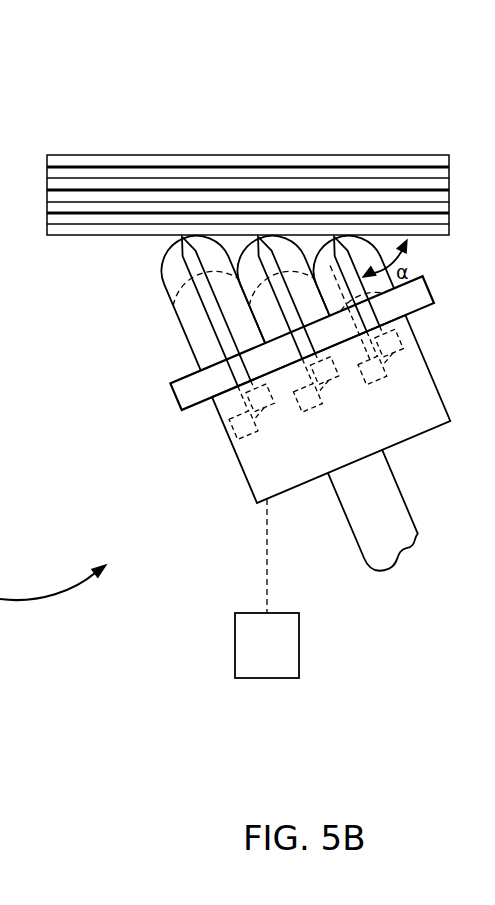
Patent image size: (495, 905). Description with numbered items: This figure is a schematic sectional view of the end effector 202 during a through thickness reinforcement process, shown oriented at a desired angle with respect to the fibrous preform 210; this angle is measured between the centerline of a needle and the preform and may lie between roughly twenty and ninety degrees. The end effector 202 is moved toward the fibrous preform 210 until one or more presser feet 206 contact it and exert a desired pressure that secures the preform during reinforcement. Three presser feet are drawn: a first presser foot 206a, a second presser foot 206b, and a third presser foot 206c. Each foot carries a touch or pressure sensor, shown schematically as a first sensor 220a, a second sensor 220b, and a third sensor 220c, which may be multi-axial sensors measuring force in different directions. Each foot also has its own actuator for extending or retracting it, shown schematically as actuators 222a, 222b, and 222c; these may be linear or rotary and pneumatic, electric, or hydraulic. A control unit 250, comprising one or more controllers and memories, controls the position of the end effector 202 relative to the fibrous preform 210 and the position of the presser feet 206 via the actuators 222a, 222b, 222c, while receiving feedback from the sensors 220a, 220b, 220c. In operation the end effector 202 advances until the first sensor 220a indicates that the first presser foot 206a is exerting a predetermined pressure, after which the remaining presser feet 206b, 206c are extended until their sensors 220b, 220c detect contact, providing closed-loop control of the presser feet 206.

The fibrous preform 210 is at (416, 142).
The presser feet 206 is at (151, 310).
The first presser foot 206a is at (357, 247).
The second presser foot 206b is at (282, 247).
The third presser foot 206c is at (206, 247).
The end effector 202 is at (179, 454).
The first sensor 220a is at (372, 380).
The second sensor 220b is at (314, 407).
The third sensor 220c is at (250, 434).
The first actuator 222a is at (400, 348).
The second actuator 222b is at (336, 374).
The third actuator 222c is at (272, 400).
The control unit 250 is at (268, 678).